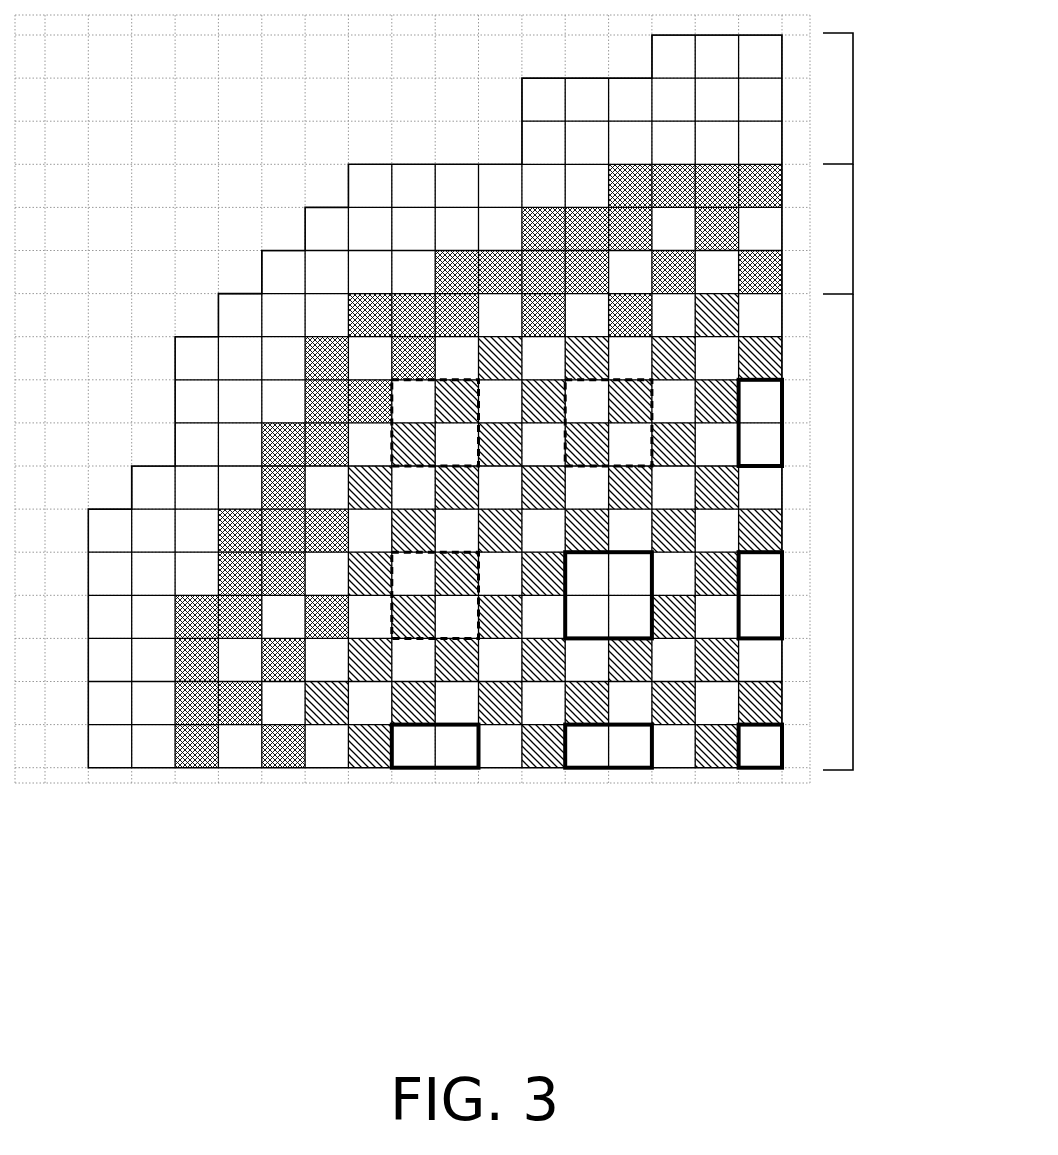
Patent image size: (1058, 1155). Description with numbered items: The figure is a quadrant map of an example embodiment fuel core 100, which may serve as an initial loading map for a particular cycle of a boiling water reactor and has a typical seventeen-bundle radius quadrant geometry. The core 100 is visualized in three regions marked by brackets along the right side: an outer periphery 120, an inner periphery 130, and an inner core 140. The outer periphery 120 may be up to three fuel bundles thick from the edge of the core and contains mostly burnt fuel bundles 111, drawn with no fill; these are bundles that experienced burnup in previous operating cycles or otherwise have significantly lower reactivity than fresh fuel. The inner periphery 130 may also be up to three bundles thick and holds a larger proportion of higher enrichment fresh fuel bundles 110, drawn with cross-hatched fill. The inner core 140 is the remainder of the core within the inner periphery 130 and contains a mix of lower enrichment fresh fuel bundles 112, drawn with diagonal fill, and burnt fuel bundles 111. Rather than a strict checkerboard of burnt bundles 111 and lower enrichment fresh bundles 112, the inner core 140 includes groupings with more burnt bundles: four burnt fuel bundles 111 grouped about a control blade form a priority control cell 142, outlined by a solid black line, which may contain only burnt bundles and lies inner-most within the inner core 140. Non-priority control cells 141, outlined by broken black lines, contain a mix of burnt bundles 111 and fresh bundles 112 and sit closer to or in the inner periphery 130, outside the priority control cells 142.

The fuel core 100 is at (101, 871).
The higher enrichment fresh fuel bundles 110 is at (198, 750).
The burnt fuel bundles 111 is at (502, 752).
The lower enrichment fresh fuel bundles 112 is at (717, 753).
The outer periphery 120 is at (856, 96).
The inner periphery 130 is at (856, 226).
The inner core 140 is at (856, 528).
The non-priority control cells 141 is at (423, 642).
The priority control cells 142 is at (472, 772).